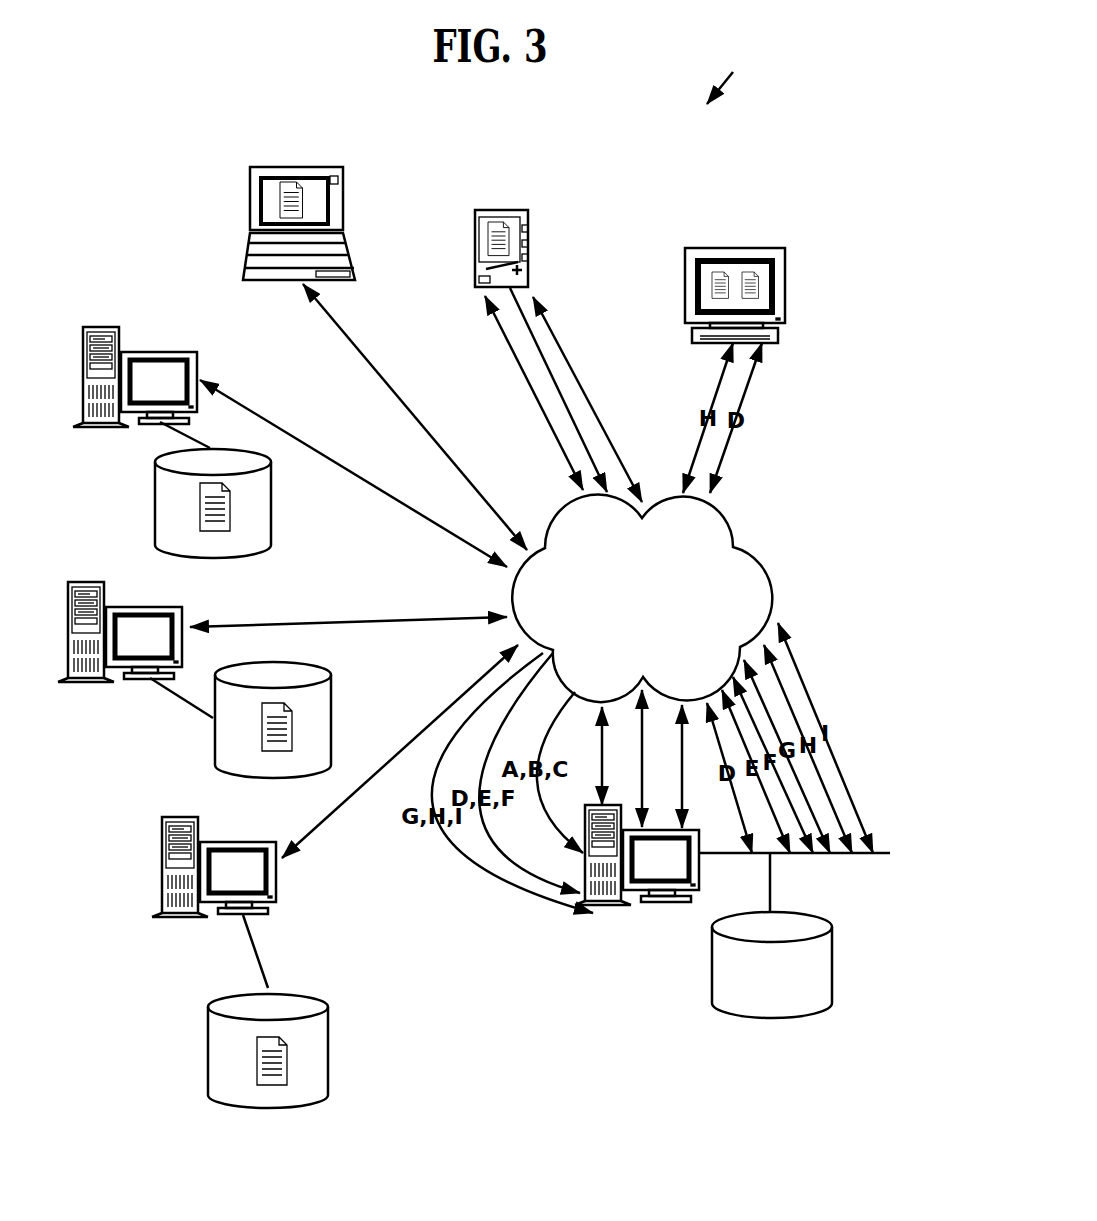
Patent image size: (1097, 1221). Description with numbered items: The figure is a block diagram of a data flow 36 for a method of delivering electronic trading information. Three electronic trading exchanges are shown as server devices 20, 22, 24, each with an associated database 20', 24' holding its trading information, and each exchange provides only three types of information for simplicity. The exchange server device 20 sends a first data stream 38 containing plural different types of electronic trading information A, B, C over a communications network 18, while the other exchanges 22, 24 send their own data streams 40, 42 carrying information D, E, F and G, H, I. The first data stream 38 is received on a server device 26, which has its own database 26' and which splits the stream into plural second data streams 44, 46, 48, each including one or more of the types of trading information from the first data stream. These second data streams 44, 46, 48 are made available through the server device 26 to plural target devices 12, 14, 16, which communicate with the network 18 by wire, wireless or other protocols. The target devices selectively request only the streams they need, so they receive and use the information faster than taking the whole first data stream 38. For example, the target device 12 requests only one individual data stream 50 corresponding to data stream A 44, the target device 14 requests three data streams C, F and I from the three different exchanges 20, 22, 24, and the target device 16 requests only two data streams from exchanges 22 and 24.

The target device 12 is at (297, 167).
The target device 14 is at (523, 212).
The target device 16 is at (735, 247).
The communications network 18 is at (723, 520).
The electronic trading exchange server device 20 is at (129, 398).
The database 20' is at (243, 490).
The electronic trading exchange server device 22 is at (145, 603).
The electronic trading exchange server device 24 is at (201, 890).
The database 24' is at (268, 1011).
The server device 26 is at (637, 892).
The database 26' is at (800, 935).
The data flow 36 is at (732, 72).
The first data stream 38 is at (243, 400).
The first data stream 40 is at (397, 607).
The first data stream 42 is at (428, 725).
The second data stream 44 is at (603, 735).
The second data stream 46 is at (640, 790).
The second data stream 48 is at (503, 338).
The individual data stream 50 is at (447, 450).